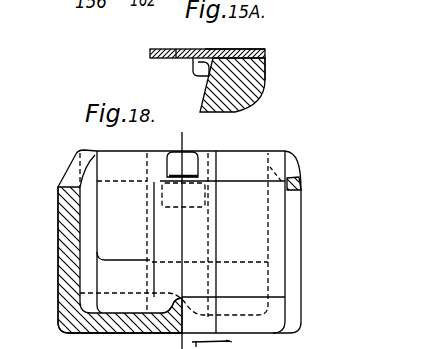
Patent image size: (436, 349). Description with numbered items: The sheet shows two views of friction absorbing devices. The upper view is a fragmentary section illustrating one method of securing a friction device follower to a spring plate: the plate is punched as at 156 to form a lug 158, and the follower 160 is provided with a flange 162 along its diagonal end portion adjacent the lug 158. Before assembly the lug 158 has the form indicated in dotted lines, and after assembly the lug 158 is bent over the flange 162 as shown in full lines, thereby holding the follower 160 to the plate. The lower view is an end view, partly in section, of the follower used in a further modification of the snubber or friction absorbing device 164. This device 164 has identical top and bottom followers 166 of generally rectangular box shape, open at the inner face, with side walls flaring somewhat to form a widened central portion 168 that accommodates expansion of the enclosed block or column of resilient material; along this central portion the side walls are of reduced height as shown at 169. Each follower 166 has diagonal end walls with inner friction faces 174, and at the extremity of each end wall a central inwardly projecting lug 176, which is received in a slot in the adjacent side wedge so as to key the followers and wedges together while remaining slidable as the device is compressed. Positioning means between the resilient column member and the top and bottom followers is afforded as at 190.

In FIG. 15A, the punched portion of plate 156 is at (178, 48).
In FIG. 15A, the lug 158 is at (194, 66).
In FIG. 15A, the follower 160 is at (232, 93).
In FIG. 15A, the flange 162 is at (219, 50).
In FIG. 15A, the snubber or friction absorbing device 164 is at (265, 55).
In FIG. 18, the snubber or friction absorbing device 164 is at (309, 274).
In FIG. 18, the follower 166 is at (60, 323).
In FIG. 18, the widened central portion 168 is at (62, 229).
In FIG. 18, the reduced height side wall portion 169 is at (70, 178).
In FIG. 18, the inner friction face 174 is at (120, 228).
In FIG. 18, the lug 176 is at (175, 160).
In FIG. 18, the positioning means 190 is at (173, 304).